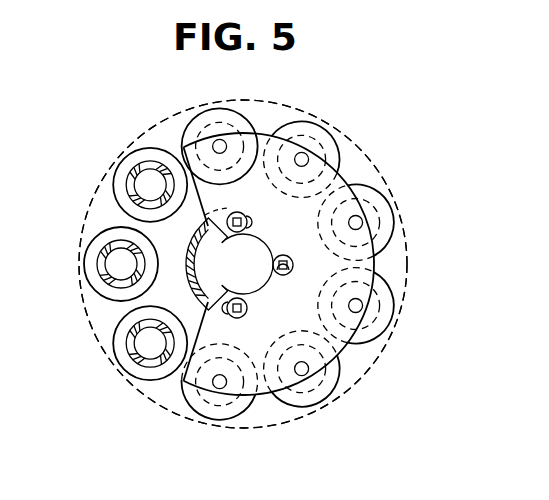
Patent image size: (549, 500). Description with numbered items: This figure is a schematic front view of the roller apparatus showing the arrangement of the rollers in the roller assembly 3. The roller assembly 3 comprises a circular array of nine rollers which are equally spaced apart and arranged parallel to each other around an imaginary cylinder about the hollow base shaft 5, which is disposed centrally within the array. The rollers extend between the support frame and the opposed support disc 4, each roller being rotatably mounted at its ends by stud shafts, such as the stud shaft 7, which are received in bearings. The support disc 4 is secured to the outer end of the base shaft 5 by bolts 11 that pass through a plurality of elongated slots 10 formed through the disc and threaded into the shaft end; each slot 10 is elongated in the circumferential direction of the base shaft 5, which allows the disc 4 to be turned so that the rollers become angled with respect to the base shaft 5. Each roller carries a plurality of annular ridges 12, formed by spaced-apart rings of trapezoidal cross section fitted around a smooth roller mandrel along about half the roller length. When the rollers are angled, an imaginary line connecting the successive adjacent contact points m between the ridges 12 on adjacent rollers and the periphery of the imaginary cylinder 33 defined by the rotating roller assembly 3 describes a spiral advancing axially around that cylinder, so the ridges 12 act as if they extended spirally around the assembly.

The roller assembly 3 is at (99, 371).
The imaginary cylinder 33 is at (278, 108).
The support disc 4 is at (347, 177).
The base shaft 5 is at (186, 267).
The stud shaft 7 is at (362, 223).
The elongated slots 10 is at (253, 222).
The bolts 11 is at (300, 262).
The annular ridges 12 is at (103, 232).
The contact points m is at (216, 110).